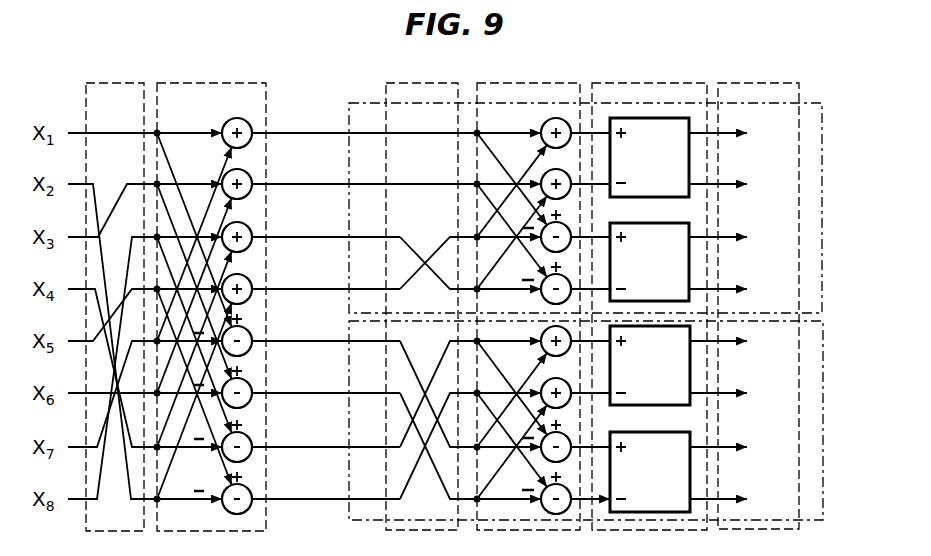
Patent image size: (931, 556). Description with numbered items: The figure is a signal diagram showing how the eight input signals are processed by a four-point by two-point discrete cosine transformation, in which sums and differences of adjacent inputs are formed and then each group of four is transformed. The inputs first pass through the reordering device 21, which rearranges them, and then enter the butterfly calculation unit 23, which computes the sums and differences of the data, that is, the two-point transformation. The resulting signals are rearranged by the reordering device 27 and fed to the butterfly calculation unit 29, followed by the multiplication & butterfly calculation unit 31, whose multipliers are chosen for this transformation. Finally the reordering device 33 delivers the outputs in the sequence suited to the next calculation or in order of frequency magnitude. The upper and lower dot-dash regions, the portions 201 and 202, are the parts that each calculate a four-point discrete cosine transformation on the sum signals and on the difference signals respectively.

The reordering device 21 is at (116, 84).
The butterfly calculation unit 23 is at (208, 84).
The reordering device 27 is at (427, 84).
The butterfly calculation unit 29 is at (522, 84).
The multiplication & butterfly calculation unit 31 is at (643, 84).
The reordering device 33 is at (753, 84).
The portion for calculating the four-point discrete cosine transformation 201 is at (822, 194).
The portion for calculating the four-point discrete cosine transformation 202 is at (823, 412).